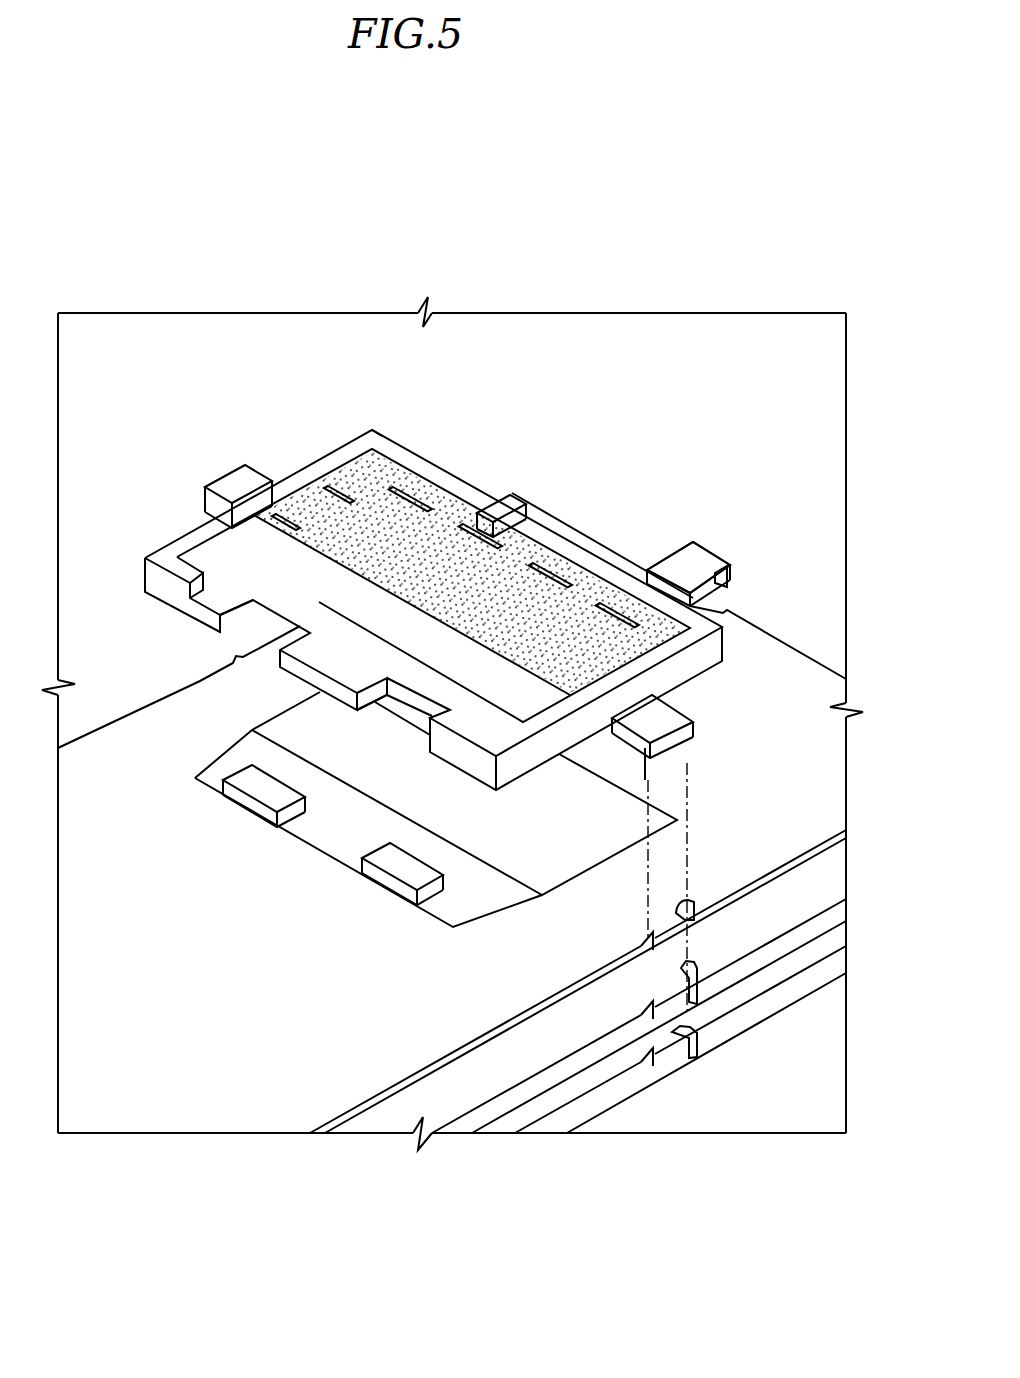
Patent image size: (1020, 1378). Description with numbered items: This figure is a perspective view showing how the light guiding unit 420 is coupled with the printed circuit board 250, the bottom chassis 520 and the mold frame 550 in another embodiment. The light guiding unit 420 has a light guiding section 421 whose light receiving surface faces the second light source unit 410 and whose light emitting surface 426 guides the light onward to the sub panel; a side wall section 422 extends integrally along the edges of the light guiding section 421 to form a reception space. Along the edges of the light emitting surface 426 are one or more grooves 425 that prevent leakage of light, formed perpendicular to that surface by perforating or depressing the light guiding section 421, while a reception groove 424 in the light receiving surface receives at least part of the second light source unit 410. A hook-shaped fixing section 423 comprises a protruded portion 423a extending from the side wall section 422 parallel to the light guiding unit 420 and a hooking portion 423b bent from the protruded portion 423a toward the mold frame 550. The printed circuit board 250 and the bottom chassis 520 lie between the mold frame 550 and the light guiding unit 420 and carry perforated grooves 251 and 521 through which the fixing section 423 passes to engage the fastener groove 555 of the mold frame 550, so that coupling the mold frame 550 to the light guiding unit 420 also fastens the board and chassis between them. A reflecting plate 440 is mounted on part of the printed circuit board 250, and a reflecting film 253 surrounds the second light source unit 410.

The light guiding unit 420 is at (300, 427).
The light guiding section 421 is at (287, 553).
The side wall section 422 is at (413, 455).
The fixing section 423 is at (840, 519).
The protruded portion 423a is at (705, 556).
The hooking portion 423b is at (730, 580).
The reception groove 424 is at (218, 634).
The groove for preventing leakage of light 425 is at (478, 512).
The light emitting surface 426 is at (510, 594).
The reflecting plate 440 is at (325, 748).
The second light source unit 410 is at (403, 870).
The reflecting film 253 is at (313, 838).
The printed circuit board 250 is at (448, 1055).
The perforated groove 251 is at (695, 900).
The bottom chassis 520 is at (530, 1078).
The perforated groove 521 is at (697, 962).
The mold frame 550 is at (585, 1098).
The fastener groove 555 is at (697, 1040).